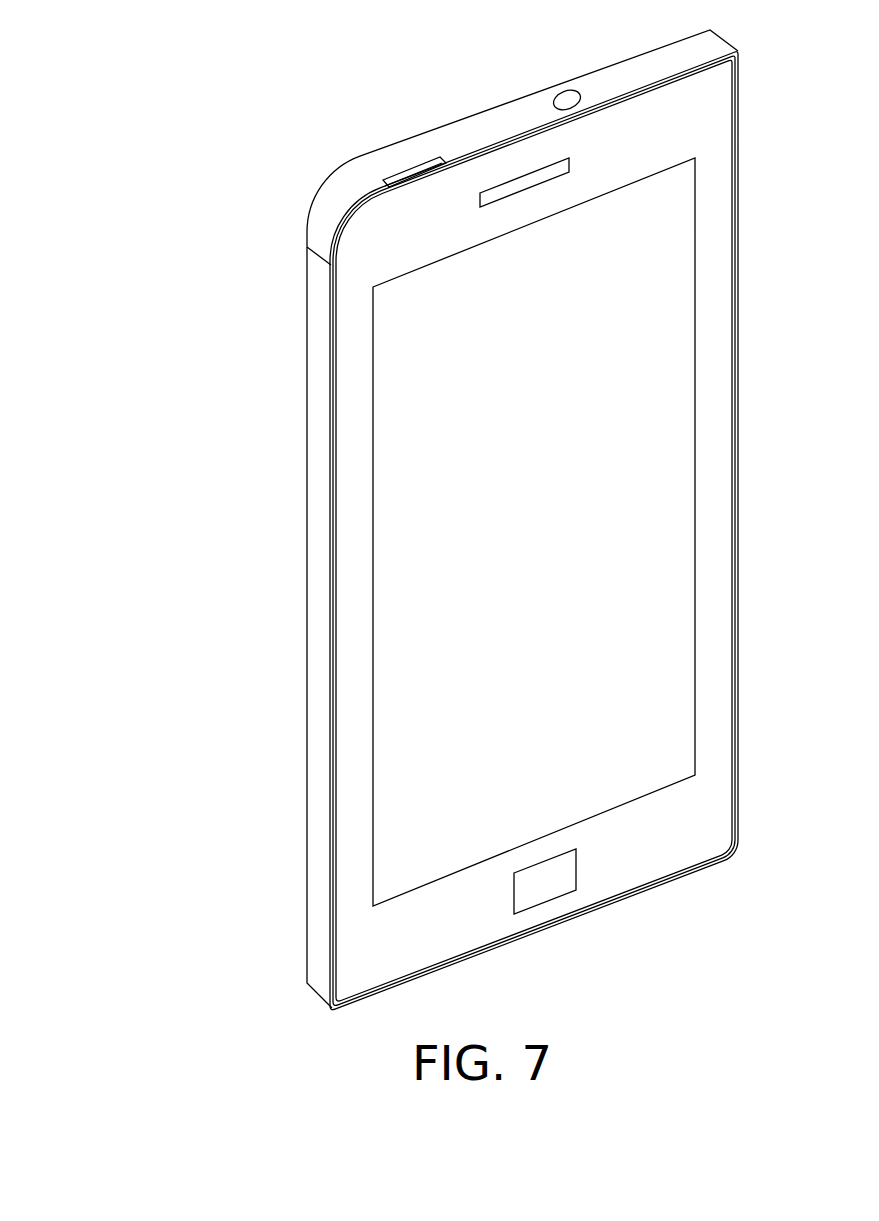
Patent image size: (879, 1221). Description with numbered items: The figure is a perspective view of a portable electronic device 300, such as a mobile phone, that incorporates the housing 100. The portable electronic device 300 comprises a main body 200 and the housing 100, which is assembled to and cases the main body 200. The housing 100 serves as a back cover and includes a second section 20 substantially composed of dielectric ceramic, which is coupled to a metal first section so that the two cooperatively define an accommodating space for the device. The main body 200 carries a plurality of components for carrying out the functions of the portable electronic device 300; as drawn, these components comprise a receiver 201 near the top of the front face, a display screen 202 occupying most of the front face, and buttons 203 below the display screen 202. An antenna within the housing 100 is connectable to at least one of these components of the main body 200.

The second section 20 is at (480, 138).
The housing 100 is at (317, 780).
The main body 200 is at (223, 407).
The receiver 201 is at (503, 188).
The display screen 202 is at (405, 472).
The buttons 203 is at (535, 873).
The portable electronic device 300 is at (140, 528).